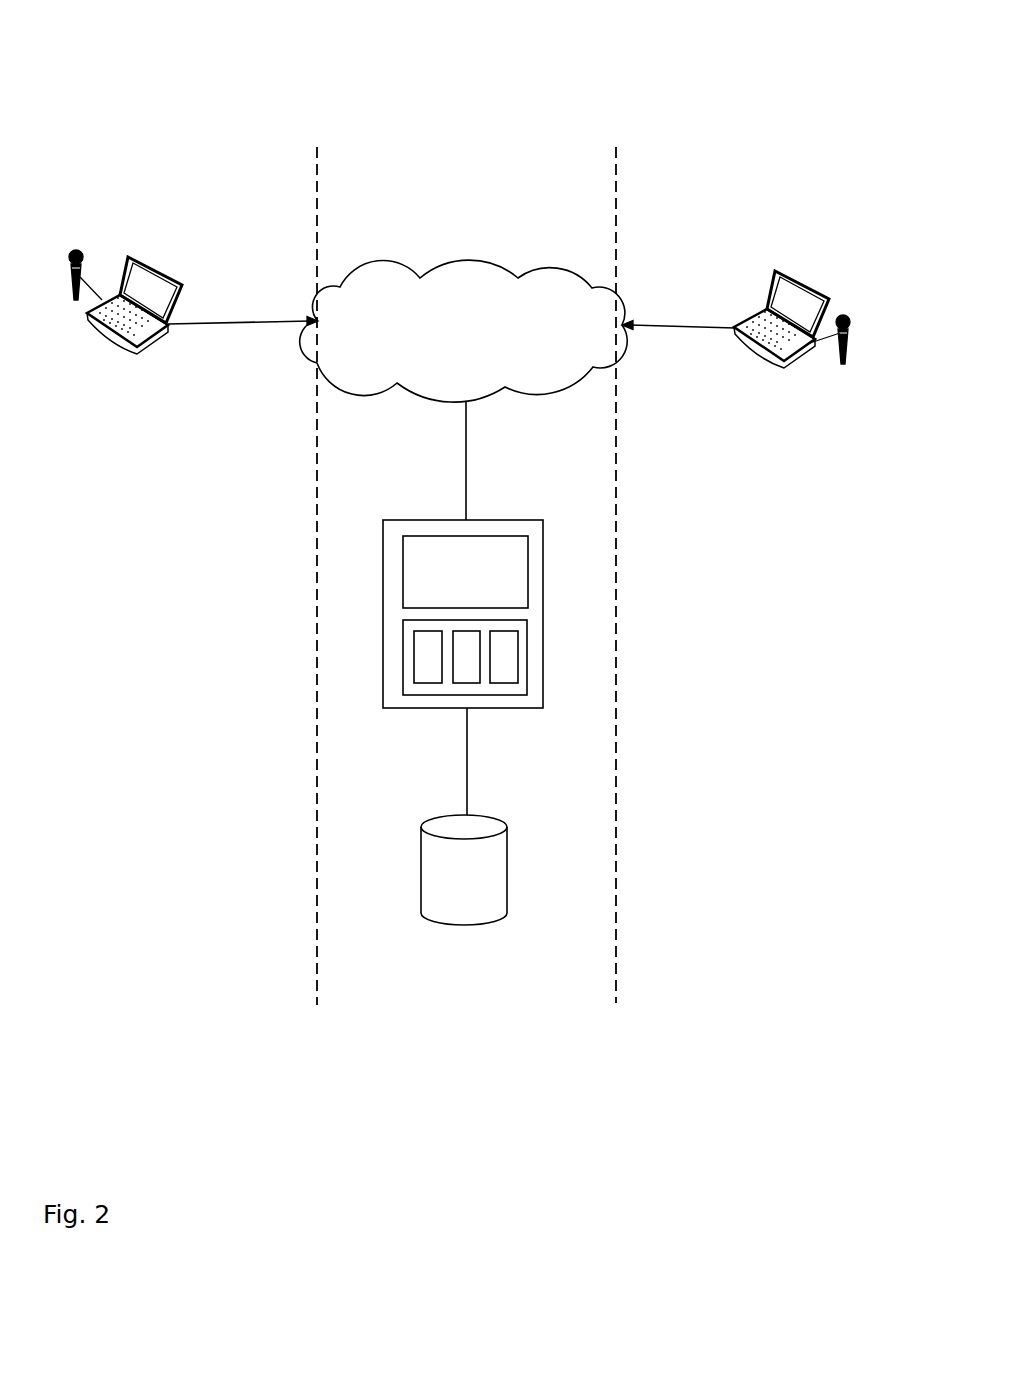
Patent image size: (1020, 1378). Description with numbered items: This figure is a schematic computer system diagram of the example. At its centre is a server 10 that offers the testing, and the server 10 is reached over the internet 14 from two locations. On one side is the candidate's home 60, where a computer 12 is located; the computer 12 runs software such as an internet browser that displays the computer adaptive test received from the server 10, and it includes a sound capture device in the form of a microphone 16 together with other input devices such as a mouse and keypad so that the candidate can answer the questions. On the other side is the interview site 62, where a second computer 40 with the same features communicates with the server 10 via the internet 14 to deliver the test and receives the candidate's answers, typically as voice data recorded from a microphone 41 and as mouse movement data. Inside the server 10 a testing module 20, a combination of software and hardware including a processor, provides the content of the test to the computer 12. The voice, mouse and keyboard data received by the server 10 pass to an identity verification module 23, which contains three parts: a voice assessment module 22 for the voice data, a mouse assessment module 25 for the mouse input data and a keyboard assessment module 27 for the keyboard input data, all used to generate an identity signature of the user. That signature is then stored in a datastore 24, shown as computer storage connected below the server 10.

The server 10 is at (496, 607).
The computer 12 is at (158, 270).
The internet 14 is at (455, 262).
The microphone 16 is at (76, 248).
The testing module 20 is at (528, 557).
The voice assessment module 22 is at (430, 685).
The identity verification module 23 is at (503, 693).
The datastore 24 is at (508, 852).
The mouse assessment module 25 is at (468, 685).
The keyboard assessment module 27 is at (508, 685).
The second computer 40 is at (790, 272).
The microphone 41 is at (845, 315).
The home 60 is at (155, 88).
The interview site 62 is at (755, 72).